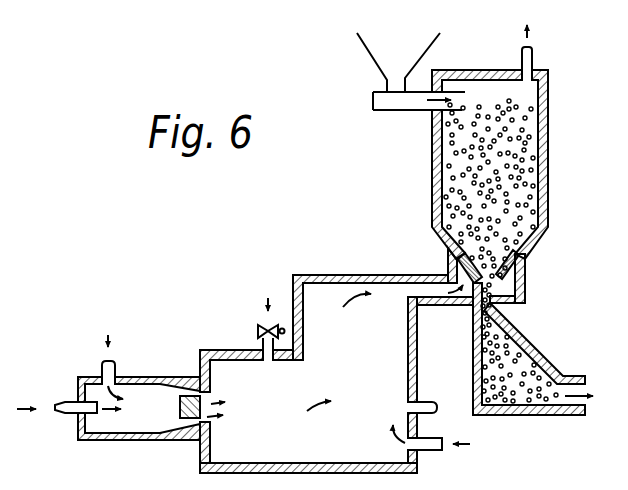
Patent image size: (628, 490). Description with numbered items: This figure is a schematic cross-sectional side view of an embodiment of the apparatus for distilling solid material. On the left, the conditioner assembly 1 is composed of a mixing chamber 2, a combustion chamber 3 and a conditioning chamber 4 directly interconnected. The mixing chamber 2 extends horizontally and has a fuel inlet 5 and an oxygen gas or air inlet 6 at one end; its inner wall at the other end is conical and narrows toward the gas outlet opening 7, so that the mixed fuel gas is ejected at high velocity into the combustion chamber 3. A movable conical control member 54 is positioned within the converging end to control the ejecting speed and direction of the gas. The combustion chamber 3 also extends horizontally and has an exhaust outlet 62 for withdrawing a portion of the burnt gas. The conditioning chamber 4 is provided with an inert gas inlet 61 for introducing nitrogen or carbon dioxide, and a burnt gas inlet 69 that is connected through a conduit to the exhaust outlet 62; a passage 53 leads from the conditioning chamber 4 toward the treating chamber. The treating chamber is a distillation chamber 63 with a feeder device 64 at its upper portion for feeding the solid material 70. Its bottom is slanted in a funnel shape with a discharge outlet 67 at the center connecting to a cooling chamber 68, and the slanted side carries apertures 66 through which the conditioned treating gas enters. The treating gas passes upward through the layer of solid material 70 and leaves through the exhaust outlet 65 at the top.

The conditioner assembly 1 is at (165, 310).
The mixing chamber 2 is at (133, 431).
The combustion chamber 3 is at (246, 406).
The conditioning chamber 4 is at (370, 369).
The fuel inlet 5 is at (66, 414).
The oxygen gas or air inlet 6 is at (117, 364).
The gas outlet opening 7 is at (226, 405).
The passage 53 is at (425, 287).
The conical control member 54 is at (199, 439).
The inert gas inlet 61 is at (432, 438).
The exhaust outlet 62 is at (262, 338).
The distillation chamber 63 is at (530, 117).
The feeder device 64 is at (393, 111).
The exhaust outlet 65 is at (534, 58).
The apertures 66 is at (524, 272).
The discharge outlet 67 is at (506, 304).
The cooling chamber 68 is at (523, 352).
The burnt gas inlet 69 is at (428, 402).
The solid material 70 is at (527, 170).